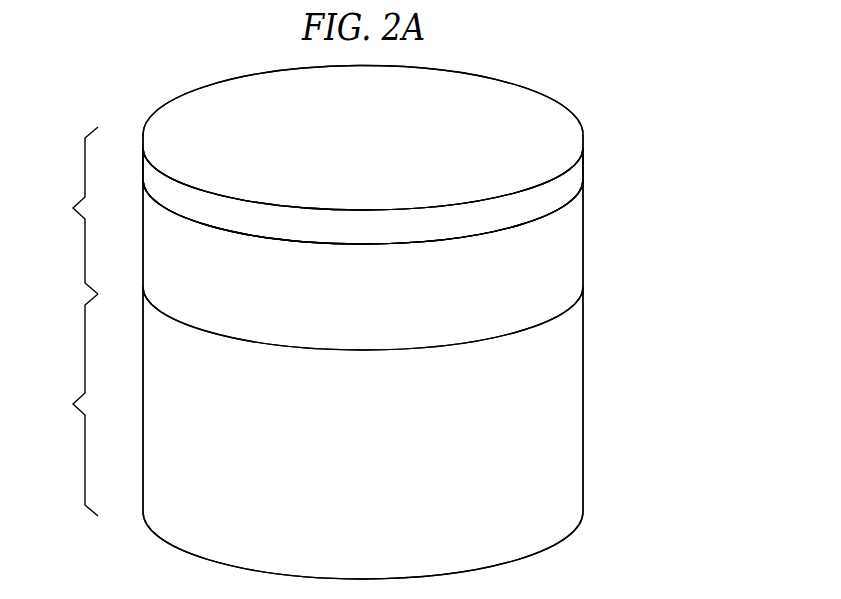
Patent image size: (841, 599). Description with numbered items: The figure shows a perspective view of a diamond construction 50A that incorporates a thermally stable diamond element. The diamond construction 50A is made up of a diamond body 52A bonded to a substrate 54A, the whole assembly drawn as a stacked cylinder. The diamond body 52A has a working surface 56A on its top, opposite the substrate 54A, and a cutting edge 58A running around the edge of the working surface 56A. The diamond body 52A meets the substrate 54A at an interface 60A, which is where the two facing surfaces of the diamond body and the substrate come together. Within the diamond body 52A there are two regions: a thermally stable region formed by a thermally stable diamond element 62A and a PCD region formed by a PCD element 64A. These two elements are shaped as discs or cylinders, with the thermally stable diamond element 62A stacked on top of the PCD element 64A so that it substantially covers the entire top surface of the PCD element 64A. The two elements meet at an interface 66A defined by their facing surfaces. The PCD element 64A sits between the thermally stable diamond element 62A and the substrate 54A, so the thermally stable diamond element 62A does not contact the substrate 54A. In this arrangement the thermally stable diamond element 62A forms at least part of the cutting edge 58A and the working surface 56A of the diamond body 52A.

The diamond construction 50A is at (627, 72).
The diamond body 52A is at (59, 210).
The substrate 54A is at (59, 405).
The working surface 56A is at (230, 113).
The cutting edge 58A is at (584, 127).
The interface 60A is at (253, 365).
The thermally stable diamond element 62A is at (608, 164).
The PCD element 64A is at (608, 234).
The interface 66A is at (253, 258).